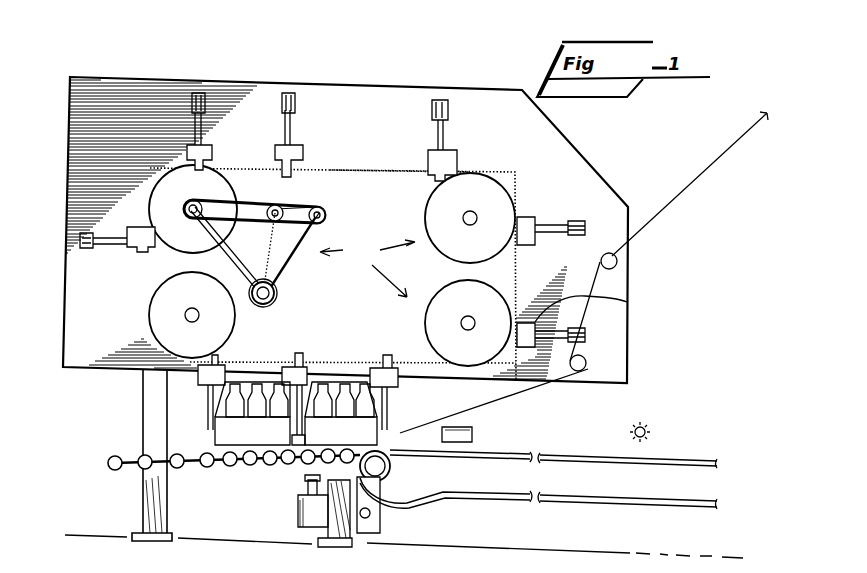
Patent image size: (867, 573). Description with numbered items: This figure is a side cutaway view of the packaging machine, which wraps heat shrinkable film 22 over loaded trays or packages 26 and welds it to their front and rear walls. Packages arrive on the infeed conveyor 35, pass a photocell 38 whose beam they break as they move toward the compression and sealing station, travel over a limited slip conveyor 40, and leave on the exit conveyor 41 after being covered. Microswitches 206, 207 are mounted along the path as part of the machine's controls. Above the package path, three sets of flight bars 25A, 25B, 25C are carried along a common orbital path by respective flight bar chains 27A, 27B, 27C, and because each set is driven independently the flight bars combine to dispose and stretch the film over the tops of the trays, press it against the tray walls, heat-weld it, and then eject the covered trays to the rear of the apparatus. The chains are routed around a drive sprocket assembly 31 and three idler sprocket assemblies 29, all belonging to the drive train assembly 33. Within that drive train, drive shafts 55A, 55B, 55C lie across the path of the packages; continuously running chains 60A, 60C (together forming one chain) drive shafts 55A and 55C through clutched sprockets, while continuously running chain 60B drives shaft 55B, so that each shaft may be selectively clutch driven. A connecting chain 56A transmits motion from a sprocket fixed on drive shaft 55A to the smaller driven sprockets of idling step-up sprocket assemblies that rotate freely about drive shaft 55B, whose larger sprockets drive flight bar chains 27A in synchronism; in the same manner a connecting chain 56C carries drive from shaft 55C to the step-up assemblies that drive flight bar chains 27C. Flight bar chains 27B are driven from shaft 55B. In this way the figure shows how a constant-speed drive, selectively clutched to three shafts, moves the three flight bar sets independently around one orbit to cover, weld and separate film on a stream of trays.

The film 22 is at (715, 160).
The flight bar 25A is at (299, 158).
The flight bar 25B is at (212, 150).
The flight bar 25C is at (456, 156).
The loaded tray 26 is at (231, 466).
The flight bar chain 27A is at (358, 168).
The flight bar chain 27B is at (380, 103).
The flight bar chain 27C is at (400, 170).
The idler sprocket assembly 29 is at (487, 188).
The drive sprocket assembly 31 is at (148, 265).
The drive train assembly 33 is at (367, 268).
The infeed conveyor 35 is at (685, 455).
The photocell 38 is at (642, 422).
The limited slip conveyor 40 is at (295, 465).
The exit conveyor 41 is at (132, 473).
The drive shaft 55A is at (326, 216).
The drive shaft 55B is at (186, 205).
The drive shaft 55C is at (325, 207).
The connecting chain 56A is at (305, 262).
The connecting chain 56C is at (269, 207).
The continuously running chain 60A is at (292, 312).
The continuously running chain 60B is at (240, 308).
The continuously running chain 60C is at (308, 320).
The microswitch 206 is at (470, 428).
The microswitch 207 is at (515, 418).